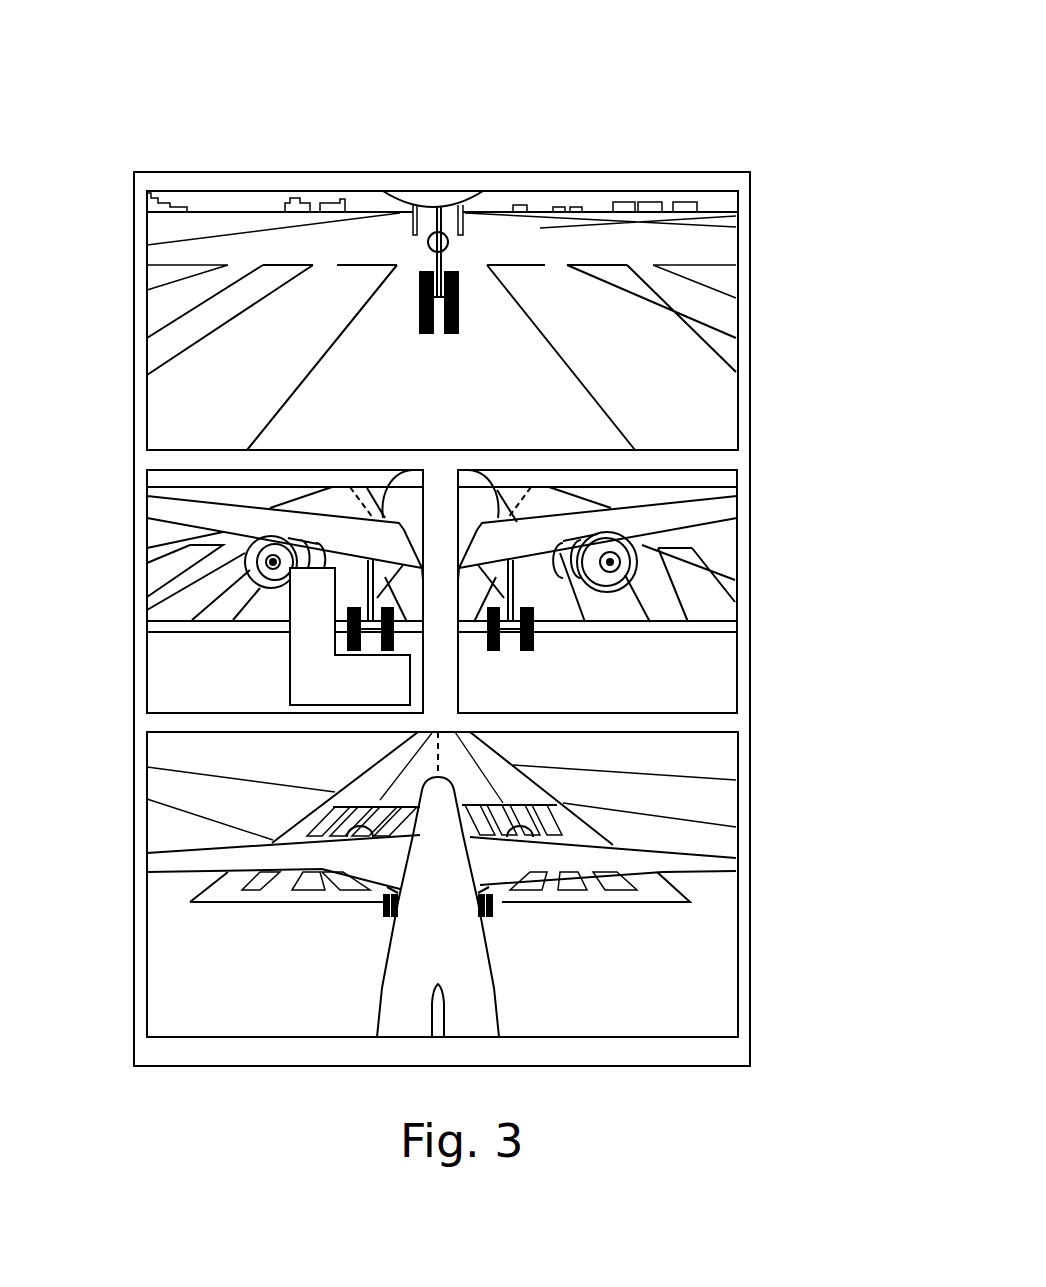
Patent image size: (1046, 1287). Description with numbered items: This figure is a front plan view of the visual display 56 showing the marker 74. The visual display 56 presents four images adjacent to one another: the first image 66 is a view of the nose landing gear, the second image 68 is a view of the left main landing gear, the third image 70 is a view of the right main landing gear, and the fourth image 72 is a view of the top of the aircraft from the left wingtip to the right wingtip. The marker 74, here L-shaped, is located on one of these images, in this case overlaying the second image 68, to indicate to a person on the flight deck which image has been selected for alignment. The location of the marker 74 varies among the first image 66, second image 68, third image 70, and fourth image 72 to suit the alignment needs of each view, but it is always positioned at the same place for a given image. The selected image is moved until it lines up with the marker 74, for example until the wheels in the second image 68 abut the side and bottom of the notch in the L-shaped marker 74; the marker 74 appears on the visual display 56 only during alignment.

The visual display 56 is at (678, 112).
The first image 66 is at (147, 309).
The second image 68 is at (147, 577).
The third image 70 is at (738, 574).
The fourth image 72 is at (738, 907).
The marker 74 is at (307, 677).